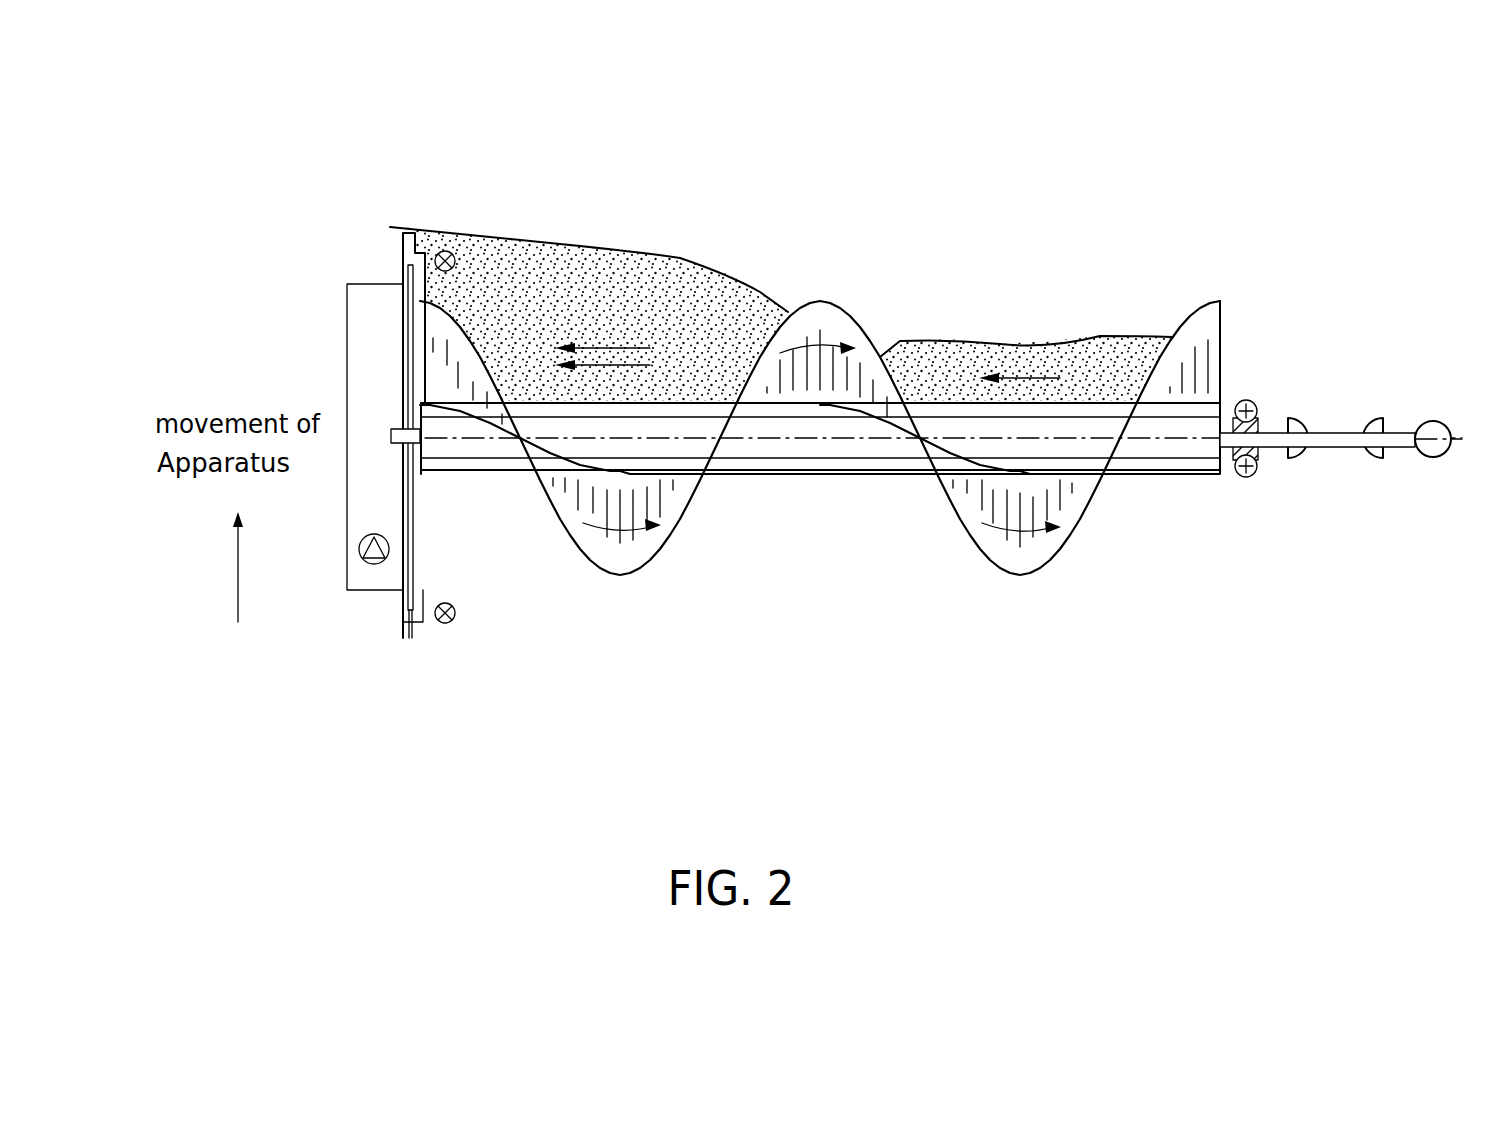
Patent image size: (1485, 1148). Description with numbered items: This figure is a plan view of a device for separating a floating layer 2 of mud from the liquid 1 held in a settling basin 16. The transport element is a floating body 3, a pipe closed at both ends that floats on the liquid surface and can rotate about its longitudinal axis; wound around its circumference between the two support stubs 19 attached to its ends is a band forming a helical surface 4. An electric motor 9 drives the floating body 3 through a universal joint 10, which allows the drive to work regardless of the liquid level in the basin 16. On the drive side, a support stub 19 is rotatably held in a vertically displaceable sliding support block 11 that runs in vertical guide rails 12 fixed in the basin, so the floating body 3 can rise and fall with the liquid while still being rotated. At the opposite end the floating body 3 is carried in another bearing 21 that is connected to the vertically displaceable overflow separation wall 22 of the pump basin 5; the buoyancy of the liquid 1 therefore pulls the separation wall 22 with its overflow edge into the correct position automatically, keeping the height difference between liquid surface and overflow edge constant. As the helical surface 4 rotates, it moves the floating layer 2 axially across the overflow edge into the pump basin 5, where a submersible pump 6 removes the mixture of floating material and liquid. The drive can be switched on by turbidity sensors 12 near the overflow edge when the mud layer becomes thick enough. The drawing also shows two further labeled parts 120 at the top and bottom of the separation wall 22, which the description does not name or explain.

The liquid 1 is at (763, 539).
The floating layer 2 is at (578, 298).
The floating body 3 is at (808, 448).
The helical surface 4 is at (830, 337).
The pump basin 5 is at (374, 590).
The submersible pump 6 is at (362, 560).
The electric motor 9 is at (1431, 440).
The universal joint 10 is at (1333, 432).
The sliding support block 11 is at (1235, 473).
The vertical guide rails 12 is at (1251, 477).
The settling basin 16 is at (820, 392).
The support stubs 19 is at (392, 431).
The bearing 21 is at (416, 422).
The overflow separation wall 22 is at (414, 618).
The fastening screw 120 is at (439, 253).